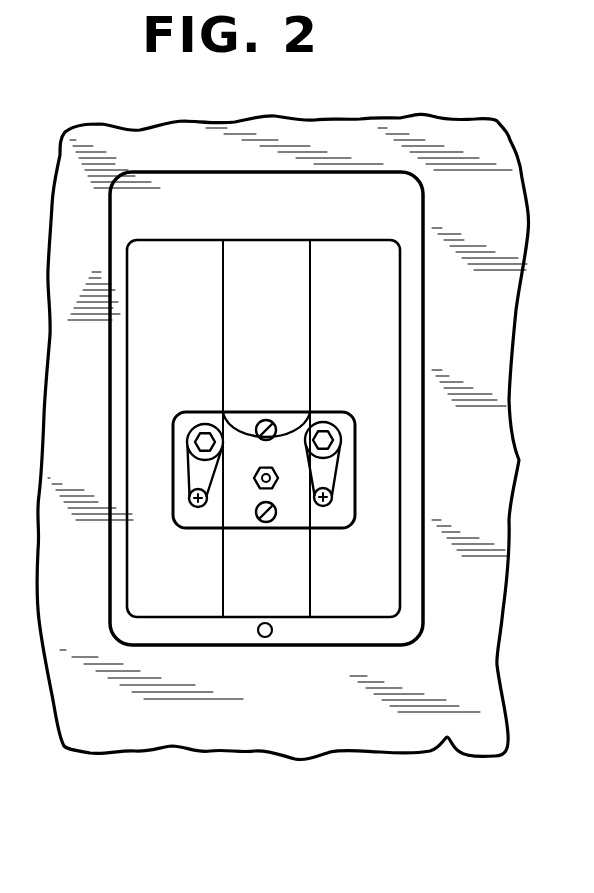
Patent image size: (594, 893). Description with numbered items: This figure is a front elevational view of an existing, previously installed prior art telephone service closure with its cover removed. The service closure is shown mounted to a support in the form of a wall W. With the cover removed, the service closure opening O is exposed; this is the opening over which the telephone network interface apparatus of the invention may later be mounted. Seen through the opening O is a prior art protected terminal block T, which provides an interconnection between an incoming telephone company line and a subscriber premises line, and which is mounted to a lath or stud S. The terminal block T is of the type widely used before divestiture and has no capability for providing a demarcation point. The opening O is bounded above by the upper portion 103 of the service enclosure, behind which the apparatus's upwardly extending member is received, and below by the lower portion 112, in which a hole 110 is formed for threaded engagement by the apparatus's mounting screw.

The wall W is at (475, 118).
The upper portion of the telephone service enclosure 103 is at (284, 215).
The lower portion of the service enclosure 112 is at (366, 637).
The service closure opening O is at (183, 378).
The lath or stud S is at (428, 205).
The protected terminal block T is at (356, 450).
The hole 110 is at (265, 637).